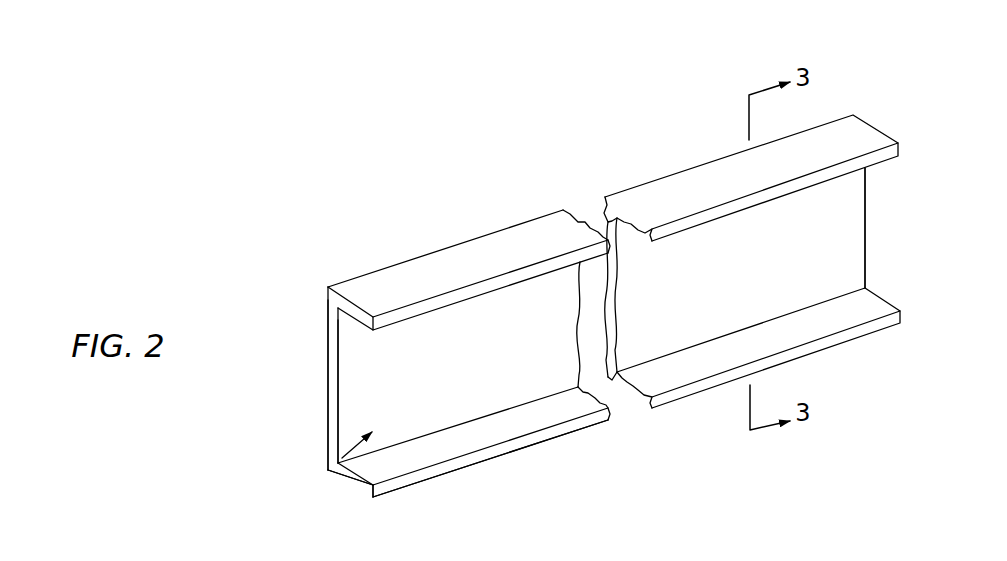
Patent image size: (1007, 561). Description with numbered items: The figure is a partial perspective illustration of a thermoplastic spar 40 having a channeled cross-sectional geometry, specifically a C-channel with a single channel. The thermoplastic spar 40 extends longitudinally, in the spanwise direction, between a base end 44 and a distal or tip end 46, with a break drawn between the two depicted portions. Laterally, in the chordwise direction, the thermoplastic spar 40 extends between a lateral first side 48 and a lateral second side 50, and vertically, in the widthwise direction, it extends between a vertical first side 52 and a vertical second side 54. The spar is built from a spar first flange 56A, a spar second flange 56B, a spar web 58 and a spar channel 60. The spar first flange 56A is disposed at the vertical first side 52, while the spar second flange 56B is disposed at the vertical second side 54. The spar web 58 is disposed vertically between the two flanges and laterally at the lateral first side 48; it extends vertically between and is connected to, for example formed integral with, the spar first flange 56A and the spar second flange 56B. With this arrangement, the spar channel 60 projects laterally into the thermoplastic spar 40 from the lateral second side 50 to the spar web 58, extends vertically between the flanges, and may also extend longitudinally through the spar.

The thermoplastic spar 40 is at (922, 102).
The base end 44 is at (327, 380).
The distal end 46 is at (867, 227).
The lateral first side 48 is at (327, 448).
The lateral second side 50 is at (442, 477).
The vertical first side 52 is at (380, 278).
The vertical second side 54 is at (348, 483).
The spar first flange 56A is at (478, 268).
The spar second flange 56B is at (514, 458).
The spar web 58 is at (320, 337).
The spar channel 60 is at (328, 470).